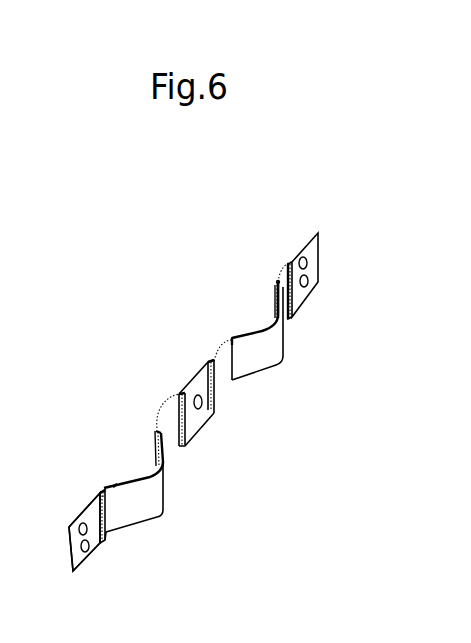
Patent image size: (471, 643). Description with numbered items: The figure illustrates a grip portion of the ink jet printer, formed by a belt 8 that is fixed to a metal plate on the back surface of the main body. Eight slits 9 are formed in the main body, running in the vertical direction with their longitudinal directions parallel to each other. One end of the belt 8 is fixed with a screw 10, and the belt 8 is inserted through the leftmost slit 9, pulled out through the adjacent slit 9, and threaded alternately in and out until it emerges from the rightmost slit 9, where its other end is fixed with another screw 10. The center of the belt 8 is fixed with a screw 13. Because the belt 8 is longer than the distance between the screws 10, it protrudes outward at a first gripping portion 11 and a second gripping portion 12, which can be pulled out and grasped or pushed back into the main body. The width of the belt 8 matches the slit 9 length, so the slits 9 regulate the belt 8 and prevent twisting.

The belt 8 is at (72, 553).
The slit 9 is at (289, 264).
The screw 10 is at (92, 547).
The first gripping portion 11 is at (143, 505).
The second gripping portion 12 is at (277, 353).
The screw 13 is at (200, 410).